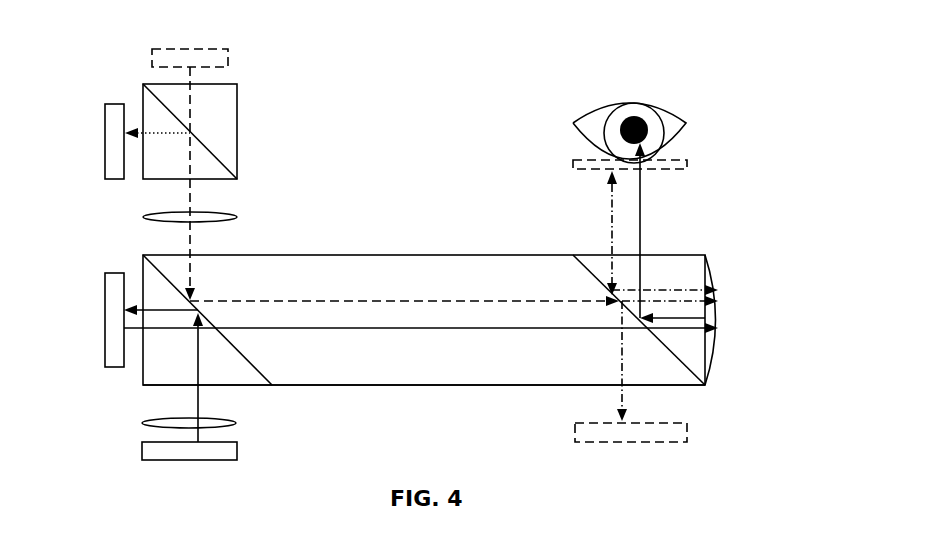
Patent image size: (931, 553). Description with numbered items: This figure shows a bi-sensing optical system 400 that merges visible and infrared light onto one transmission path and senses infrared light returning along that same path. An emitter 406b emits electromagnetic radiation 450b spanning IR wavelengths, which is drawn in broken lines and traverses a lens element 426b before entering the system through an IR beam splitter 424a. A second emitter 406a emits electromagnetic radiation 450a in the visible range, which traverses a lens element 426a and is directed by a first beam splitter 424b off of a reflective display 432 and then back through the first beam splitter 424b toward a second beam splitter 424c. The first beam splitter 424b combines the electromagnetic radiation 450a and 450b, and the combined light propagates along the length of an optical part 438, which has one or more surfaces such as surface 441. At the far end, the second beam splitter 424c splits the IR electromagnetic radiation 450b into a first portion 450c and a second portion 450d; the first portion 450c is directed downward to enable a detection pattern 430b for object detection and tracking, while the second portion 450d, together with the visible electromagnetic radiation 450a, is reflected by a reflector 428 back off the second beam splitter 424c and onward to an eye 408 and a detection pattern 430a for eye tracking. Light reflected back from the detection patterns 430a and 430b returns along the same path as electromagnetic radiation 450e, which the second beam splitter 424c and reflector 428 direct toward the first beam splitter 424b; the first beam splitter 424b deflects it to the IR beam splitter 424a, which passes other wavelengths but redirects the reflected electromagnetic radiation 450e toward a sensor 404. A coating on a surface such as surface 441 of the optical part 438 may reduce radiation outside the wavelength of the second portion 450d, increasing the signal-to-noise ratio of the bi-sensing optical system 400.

The bi-sensing optical system 400 is at (830, 115).
The sensor 404 is at (105, 131).
The emitter 406a is at (142, 451).
The emitter 406b is at (228, 60).
The eye 408 is at (686, 123).
The IR beam splitter 424a is at (237, 123).
The first beam splitter 424b is at (262, 372).
The second beam splitter 424c is at (680, 362).
The lens element 426a is at (142, 423).
The lens element 426b is at (236, 217).
The reflector 428 is at (718, 285).
The detection pattern 430a is at (687, 160).
The detection pattern 430b is at (687, 432).
The reflective display 432 is at (105, 322).
The optical part 438 is at (428, 267).
The surface 441 is at (480, 385).
The electromagnetic radiation 450a is at (375, 328).
The electromagnetic radiation 450b is at (190, 237).
The first portion 450c is at (622, 392).
The second portion 450d is at (612, 240).
The electromagnetic radiation 450e is at (150, 132).